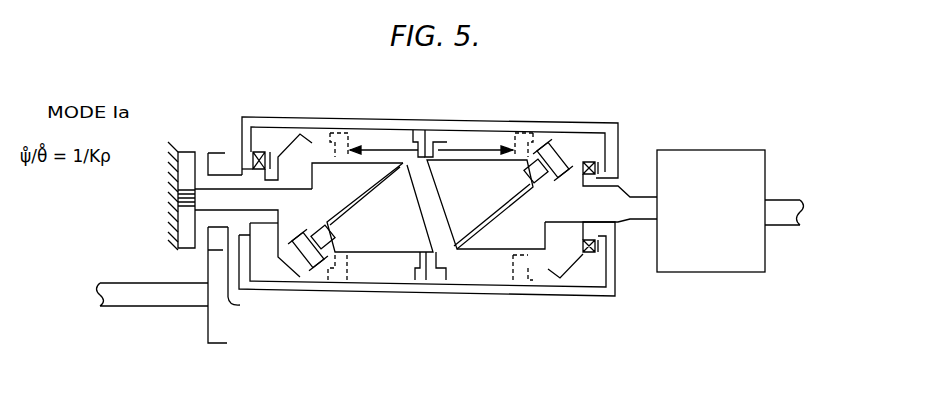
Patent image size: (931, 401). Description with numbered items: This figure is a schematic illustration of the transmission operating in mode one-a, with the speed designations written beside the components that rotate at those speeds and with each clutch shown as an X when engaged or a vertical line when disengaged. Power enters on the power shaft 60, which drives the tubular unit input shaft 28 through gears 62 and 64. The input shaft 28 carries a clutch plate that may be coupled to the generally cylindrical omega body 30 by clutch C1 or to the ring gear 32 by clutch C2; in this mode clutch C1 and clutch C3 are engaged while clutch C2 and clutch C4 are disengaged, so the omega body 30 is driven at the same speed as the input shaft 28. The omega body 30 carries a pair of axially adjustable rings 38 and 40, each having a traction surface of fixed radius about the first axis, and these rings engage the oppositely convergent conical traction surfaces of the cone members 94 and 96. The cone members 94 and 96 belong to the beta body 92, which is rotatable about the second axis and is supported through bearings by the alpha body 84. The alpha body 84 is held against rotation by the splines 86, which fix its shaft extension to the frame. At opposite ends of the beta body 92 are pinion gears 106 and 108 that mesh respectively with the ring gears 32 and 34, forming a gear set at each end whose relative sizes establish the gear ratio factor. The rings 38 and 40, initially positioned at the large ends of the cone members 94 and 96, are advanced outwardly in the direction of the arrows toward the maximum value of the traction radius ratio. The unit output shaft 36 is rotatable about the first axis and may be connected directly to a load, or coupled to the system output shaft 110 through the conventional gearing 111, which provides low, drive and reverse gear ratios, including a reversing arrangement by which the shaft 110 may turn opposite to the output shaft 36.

The unit input shaft 28 is at (256, 273).
The omega body 30 is at (463, 119).
The ring gear 32 is at (312, 143).
The ring gear 34 is at (548, 269).
The unit output shaft 36 is at (640, 222).
The axially adjustable ring 38 is at (418, 132).
The axially adjustable ring 40 is at (432, 133).
The power shaft 60 is at (147, 284).
The gear 62 is at (214, 343).
The gear 64 is at (219, 152).
The alpha body 84 is at (357, 176).
The splines 86 is at (178, 204).
The beta body 92 is at (408, 231).
The cone member 94 is at (386, 231).
The cone member 96 is at (483, 203).
The pinion gear 106 is at (303, 226).
The pinion gear 108 is at (549, 186).
The system output shaft 110 is at (777, 218).
The conventional gearing 111 is at (710, 150).
The clutch C1 is at (259, 151).
The clutch C2 is at (273, 151).
The clutch C3 is at (589, 161).
The clutch C4 is at (601, 160).